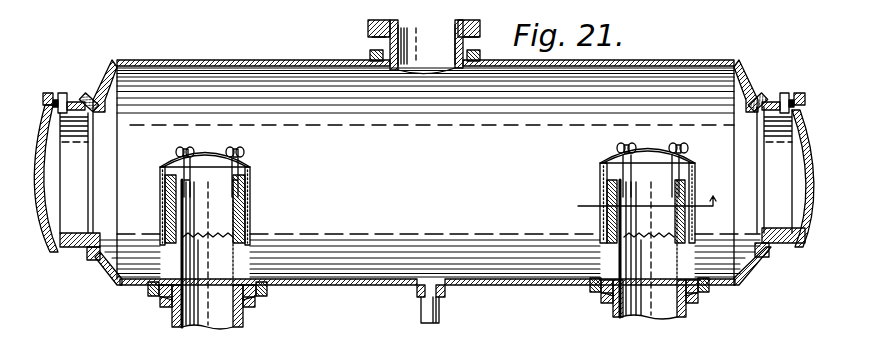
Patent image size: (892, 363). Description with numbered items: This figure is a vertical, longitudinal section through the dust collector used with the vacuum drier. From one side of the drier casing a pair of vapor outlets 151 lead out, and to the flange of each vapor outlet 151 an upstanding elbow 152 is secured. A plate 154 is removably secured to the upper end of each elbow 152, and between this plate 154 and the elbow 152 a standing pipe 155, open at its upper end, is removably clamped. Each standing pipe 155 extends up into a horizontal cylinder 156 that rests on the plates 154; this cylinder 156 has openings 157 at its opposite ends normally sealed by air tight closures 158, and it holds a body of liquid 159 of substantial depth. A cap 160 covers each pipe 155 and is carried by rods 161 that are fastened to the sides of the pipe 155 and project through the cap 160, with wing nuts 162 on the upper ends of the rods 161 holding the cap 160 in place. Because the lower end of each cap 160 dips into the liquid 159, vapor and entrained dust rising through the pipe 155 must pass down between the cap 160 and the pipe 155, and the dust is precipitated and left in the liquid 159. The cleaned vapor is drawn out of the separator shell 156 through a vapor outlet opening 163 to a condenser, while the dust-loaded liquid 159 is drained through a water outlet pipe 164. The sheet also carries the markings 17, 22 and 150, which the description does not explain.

The fragment 17 is at (185, 8).
The section line 22- 22 is at (644, 206).
The tank shell 150 is at (741, 53).
The vapor outlet 151 is at (780, 242).
The upstanding elbow 152 is at (244, 327).
The plate 154 is at (708, 288).
The standing pipe 155 is at (245, 227).
The horizontal cylinder 156 is at (425, 114).
The opening 157 is at (78, 155).
The air tight closure 158 is at (48, 93).
The body of liquid 159 is at (466, 237).
The cap 160 is at (251, 173).
The rod 161 is at (233, 170).
The wing nut 162 is at (236, 147).
The vapor outlet opening 163 is at (440, 22).
The water outlet pipe 164 is at (440, 322).